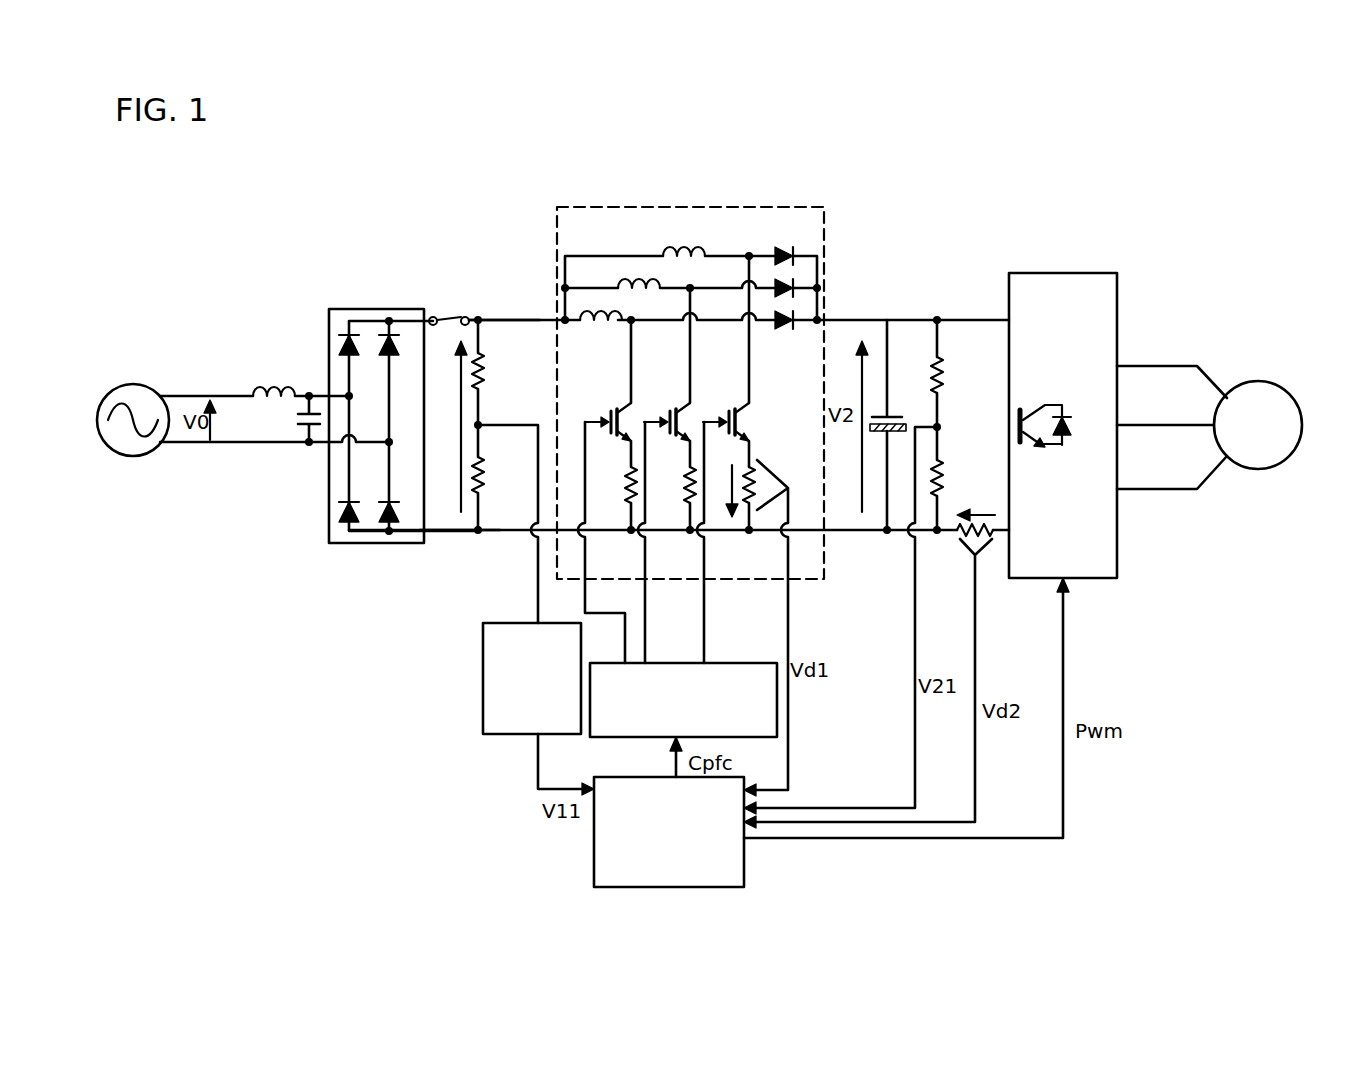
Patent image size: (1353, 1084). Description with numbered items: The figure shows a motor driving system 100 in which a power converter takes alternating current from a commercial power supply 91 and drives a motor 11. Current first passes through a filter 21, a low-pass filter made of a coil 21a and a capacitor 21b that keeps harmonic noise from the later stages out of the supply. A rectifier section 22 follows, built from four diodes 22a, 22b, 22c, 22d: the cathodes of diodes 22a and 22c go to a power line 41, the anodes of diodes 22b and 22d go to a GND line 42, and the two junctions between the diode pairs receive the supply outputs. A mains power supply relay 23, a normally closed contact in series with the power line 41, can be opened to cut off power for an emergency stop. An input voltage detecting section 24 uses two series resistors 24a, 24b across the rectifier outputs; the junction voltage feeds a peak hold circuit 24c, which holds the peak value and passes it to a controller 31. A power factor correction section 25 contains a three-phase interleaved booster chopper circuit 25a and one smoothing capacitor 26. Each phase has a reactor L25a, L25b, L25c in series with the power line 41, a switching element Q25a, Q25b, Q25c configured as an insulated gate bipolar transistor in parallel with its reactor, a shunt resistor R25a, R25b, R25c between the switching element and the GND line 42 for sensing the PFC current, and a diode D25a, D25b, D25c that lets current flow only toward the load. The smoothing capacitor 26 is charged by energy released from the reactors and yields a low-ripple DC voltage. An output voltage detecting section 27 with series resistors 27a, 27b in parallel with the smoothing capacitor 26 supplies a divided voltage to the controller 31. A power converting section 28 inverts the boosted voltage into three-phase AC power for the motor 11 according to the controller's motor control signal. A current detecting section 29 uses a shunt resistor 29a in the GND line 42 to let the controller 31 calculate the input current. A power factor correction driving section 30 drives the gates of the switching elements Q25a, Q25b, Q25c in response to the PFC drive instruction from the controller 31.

The motor driving system 100 is at (1181, 182).
The motor 11 is at (1259, 382).
The filter 21 is at (292, 371).
The coil 21a is at (264, 392).
The capacitor 21b is at (307, 428).
The rectifier section 22 is at (398, 411).
The diode 22a is at (348, 336).
The diode 22b is at (348, 537).
The diode 22c is at (392, 336).
The diode 22d is at (392, 537).
The mains power supply relay 23 is at (448, 316).
The input voltage detecting section 24 is at (491, 462).
The resistor 24a is at (480, 373).
The resistor 24b is at (480, 485).
The peak hold circuit 24c is at (483, 680).
The power factor correction section 25 is at (842, 161).
The booster chopper circuit 25a is at (727, 476).
The smoothing capacitor 26 is at (905, 412).
The output voltage detecting section 27 is at (869, 532).
The resistor 27a is at (941, 372).
The resistor 27b is at (943, 460).
The power converting section 28 is at (1058, 273).
The current detecting section 29 is at (871, 624).
The shunt resistor 29a is at (963, 548).
The power factor correction driving section 30 is at (760, 663).
The controller 31 is at (594, 858).
The power line 41 is at (512, 320).
The GND line 42 is at (446, 532).
The commercial power supply 91 is at (136, 386).
The reactor L25a is at (599, 330).
The reactor L25b is at (630, 284).
The reactor L25c is at (697, 262).
The switching element Q25a is at (609, 411).
The switching element Q25b is at (668, 411).
The switching element Q25c is at (727, 411).
The resistor R25a is at (632, 506).
The resistor R25b is at (691, 506).
The resistor R25c is at (750, 506).
The diode D25a is at (800, 310).
The diode D25b is at (800, 279).
The diode D25c is at (800, 247).